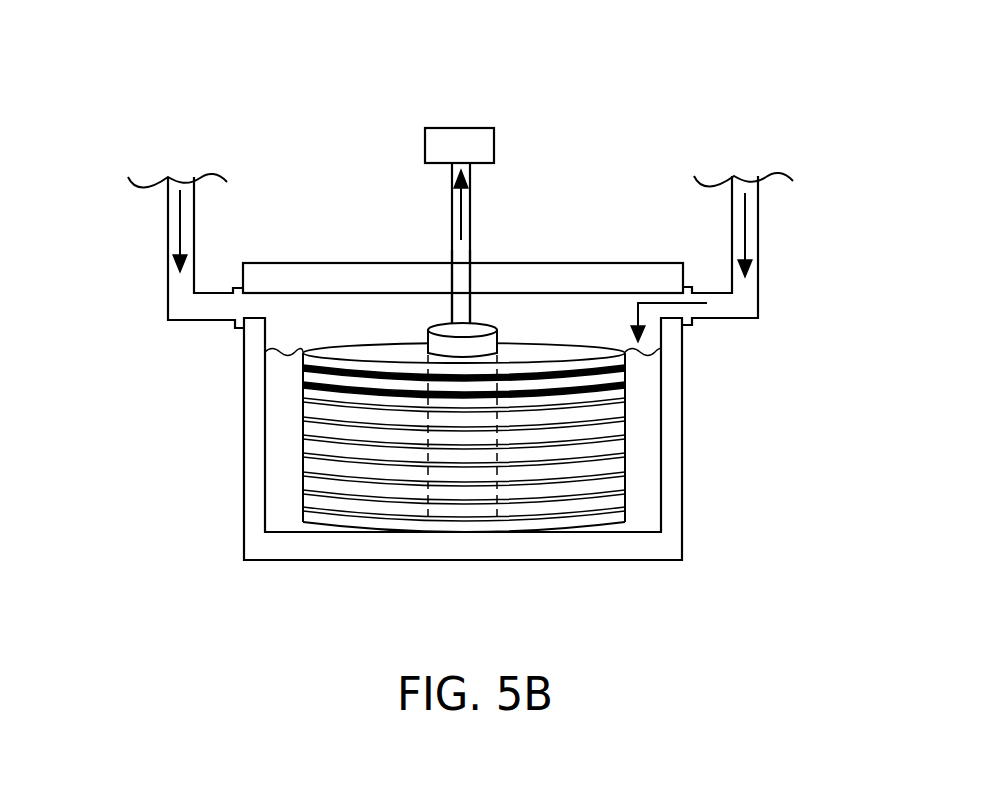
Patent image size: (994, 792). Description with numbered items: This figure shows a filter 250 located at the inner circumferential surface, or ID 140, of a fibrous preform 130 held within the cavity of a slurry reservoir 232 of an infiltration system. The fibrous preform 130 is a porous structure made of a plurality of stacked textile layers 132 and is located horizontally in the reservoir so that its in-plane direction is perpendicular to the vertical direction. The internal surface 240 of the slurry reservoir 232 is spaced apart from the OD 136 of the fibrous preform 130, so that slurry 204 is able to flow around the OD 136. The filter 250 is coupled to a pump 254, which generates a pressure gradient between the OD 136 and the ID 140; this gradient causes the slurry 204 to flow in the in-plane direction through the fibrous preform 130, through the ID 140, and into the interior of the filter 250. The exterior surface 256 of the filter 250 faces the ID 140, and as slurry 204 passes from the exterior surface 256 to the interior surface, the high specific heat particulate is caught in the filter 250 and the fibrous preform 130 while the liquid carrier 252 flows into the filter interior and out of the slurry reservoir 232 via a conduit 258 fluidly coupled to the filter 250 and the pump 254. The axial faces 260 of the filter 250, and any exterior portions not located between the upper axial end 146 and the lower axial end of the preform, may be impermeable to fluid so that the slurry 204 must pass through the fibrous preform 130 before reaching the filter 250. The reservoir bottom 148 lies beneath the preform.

The fibrous preform 130 is at (393, 363).
The textile layer 132 is at (312, 390).
The OD 136 is at (639, 477).
The ID 140 is at (418, 345).
The upper axial end 146 is at (345, 356).
The vessel bottom 148 is at (365, 532).
The slurry 204 is at (177, 220).
The slurry reservoir 232 is at (670, 447).
The internal surface 240 is at (266, 460).
The filter 250 is at (495, 474).
The liquid carrier 252 is at (465, 222).
The pump 254 is at (482, 152).
The exterior surface 256 is at (512, 282).
The conduit 258 is at (450, 243).
The axial faces 260 is at (474, 326).